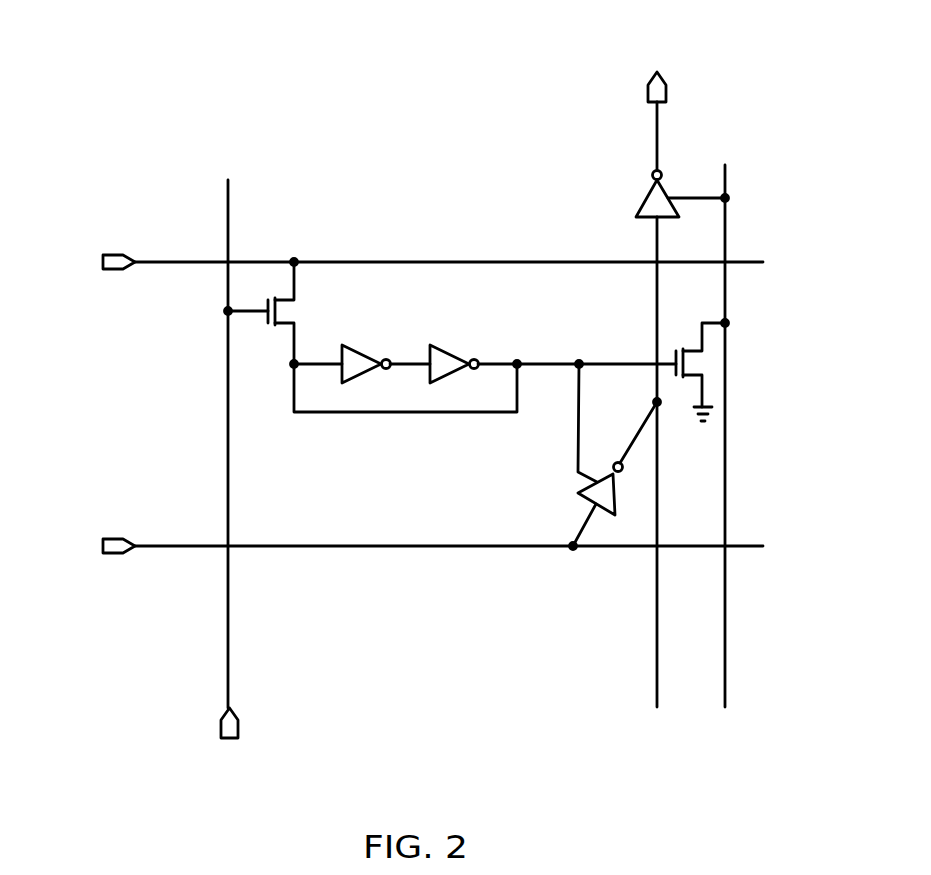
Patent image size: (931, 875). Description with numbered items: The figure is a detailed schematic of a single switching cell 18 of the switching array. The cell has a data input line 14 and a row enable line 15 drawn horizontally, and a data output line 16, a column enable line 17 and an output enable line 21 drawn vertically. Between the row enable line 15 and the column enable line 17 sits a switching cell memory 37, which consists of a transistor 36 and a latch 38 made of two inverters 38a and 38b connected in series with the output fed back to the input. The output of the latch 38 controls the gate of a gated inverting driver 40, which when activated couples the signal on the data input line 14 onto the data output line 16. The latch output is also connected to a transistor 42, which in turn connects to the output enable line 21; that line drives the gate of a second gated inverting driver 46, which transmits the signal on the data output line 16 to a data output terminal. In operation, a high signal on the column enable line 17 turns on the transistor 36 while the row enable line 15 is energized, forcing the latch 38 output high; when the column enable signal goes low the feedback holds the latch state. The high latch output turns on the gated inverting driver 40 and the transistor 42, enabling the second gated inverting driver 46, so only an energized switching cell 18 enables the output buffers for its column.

The switching cell 18 is at (388, 99).
The row enable line 15 is at (157, 264).
The data input line 14 is at (165, 548).
The column enable line 17 is at (230, 695).
The data output line 16 is at (656, 615).
The output enable line 21 is at (726, 635).
The transistor 36 is at (243, 313).
The switching cell memory 37 is at (484, 405).
The latch 38 is at (431, 346).
The first inverter 38a is at (368, 344).
The second inverter 38b is at (456, 344).
The gated inverting driver 40 is at (621, 493).
The transistor 42 is at (713, 320).
The second gated inverting driver 46 is at (640, 200).